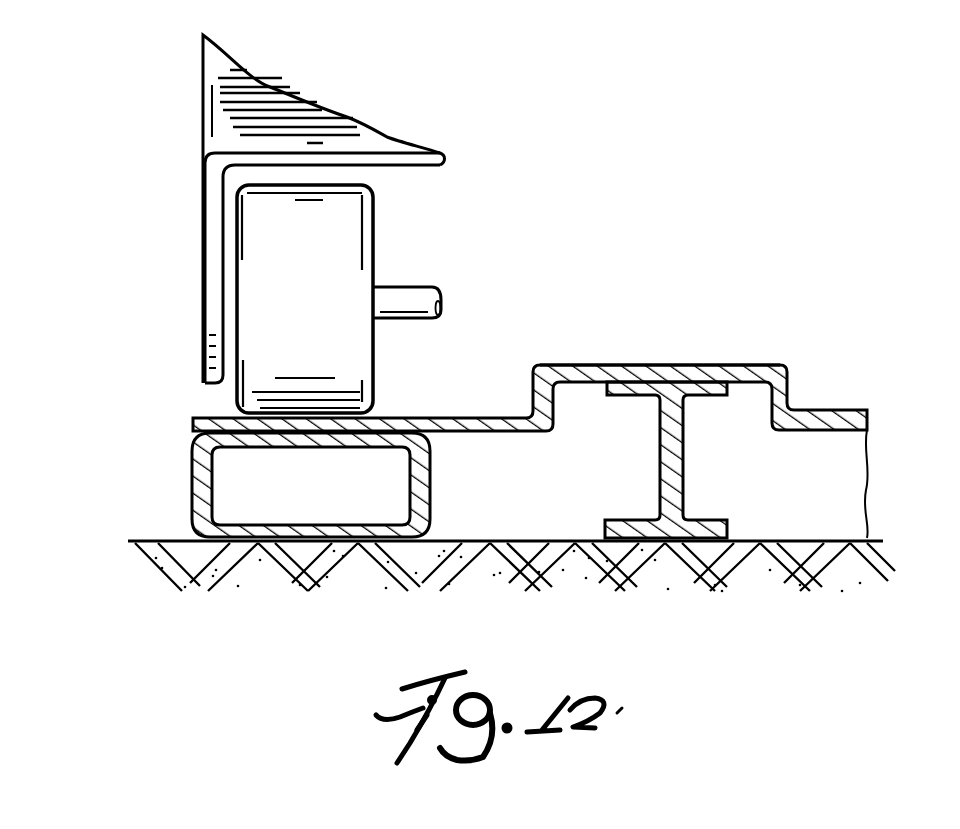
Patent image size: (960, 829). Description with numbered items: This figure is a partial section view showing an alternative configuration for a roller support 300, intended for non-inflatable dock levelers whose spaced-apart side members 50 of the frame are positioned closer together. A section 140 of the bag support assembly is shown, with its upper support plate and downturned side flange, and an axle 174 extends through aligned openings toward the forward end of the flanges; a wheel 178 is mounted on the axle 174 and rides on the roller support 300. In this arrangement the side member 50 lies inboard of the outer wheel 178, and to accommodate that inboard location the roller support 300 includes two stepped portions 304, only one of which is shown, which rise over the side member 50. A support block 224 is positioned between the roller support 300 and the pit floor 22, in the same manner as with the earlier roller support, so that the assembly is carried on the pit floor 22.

The side-by-side section 140 is at (293, 100).
The wheel 178 is at (332, 301).
The axle 174 is at (422, 293).
The roller support 300 is at (857, 410).
The stepped portion 304 is at (783, 327).
The support block 224 is at (423, 477).
The side member 50 is at (683, 458).
The pit floor 22 is at (148, 540).